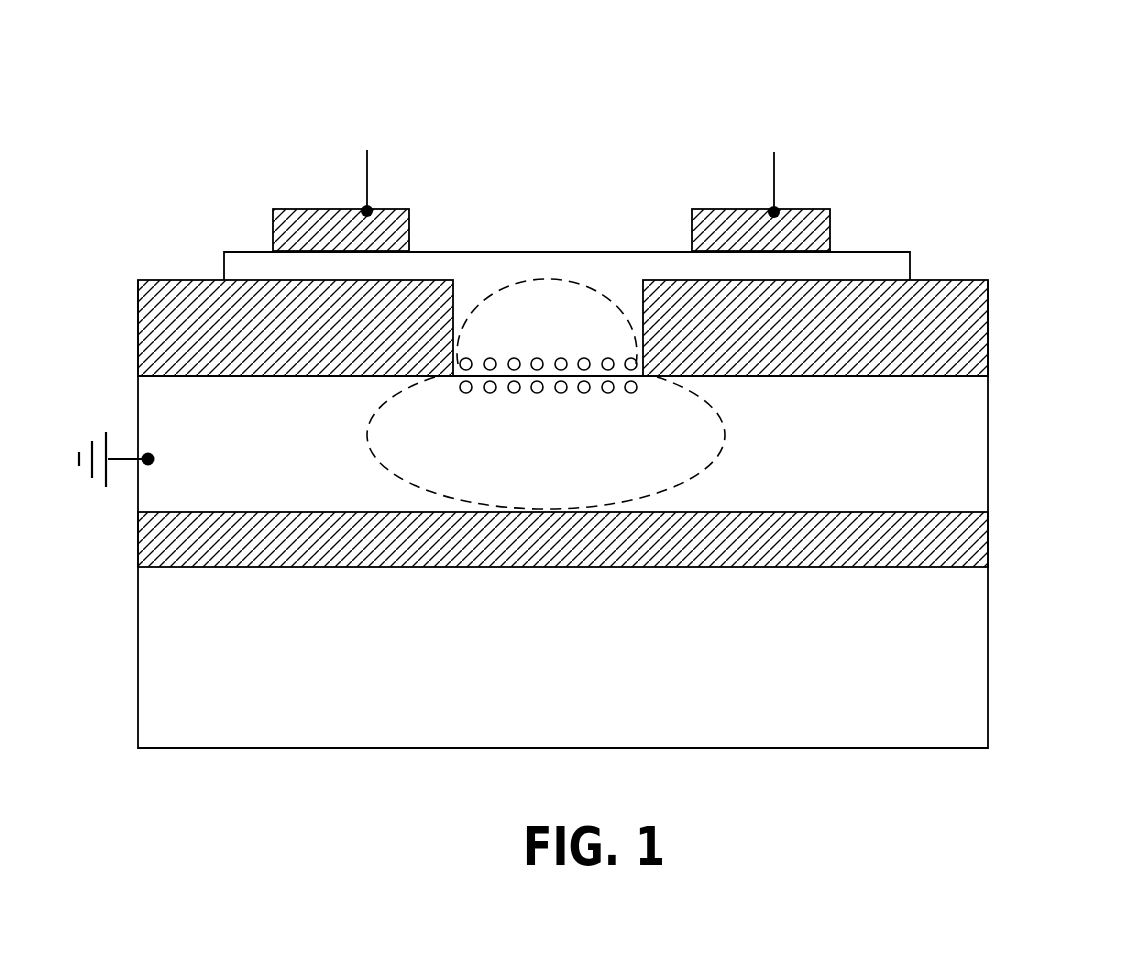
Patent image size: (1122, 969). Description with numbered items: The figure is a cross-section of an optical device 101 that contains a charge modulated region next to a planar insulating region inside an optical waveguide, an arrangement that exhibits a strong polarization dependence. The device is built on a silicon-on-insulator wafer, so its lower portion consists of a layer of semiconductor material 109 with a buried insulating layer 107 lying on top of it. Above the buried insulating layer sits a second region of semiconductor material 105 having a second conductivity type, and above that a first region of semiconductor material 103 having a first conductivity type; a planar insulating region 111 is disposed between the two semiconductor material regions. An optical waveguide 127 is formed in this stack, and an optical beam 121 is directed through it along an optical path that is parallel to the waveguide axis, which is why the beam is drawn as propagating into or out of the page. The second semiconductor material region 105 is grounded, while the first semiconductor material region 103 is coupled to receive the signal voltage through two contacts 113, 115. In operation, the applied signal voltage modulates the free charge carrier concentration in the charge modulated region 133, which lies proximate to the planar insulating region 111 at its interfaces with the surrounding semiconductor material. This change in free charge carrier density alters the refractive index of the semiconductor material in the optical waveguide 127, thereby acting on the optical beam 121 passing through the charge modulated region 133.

The optical device 101 is at (963, 65).
The first region of semiconductor material 103 is at (538, 262).
The second region of semiconductor material 105 is at (975, 432).
The buried insulating layer 107 is at (988, 530).
The layer of semiconductor material 109 is at (975, 652).
The planar insulating region 111 is at (653, 378).
The contact 113 is at (272, 210).
The contact 115 is at (830, 212).
The optical beam 121 is at (722, 457).
The optical waveguide 127 is at (500, 222).
The charge modulated region 133 is at (507, 356).